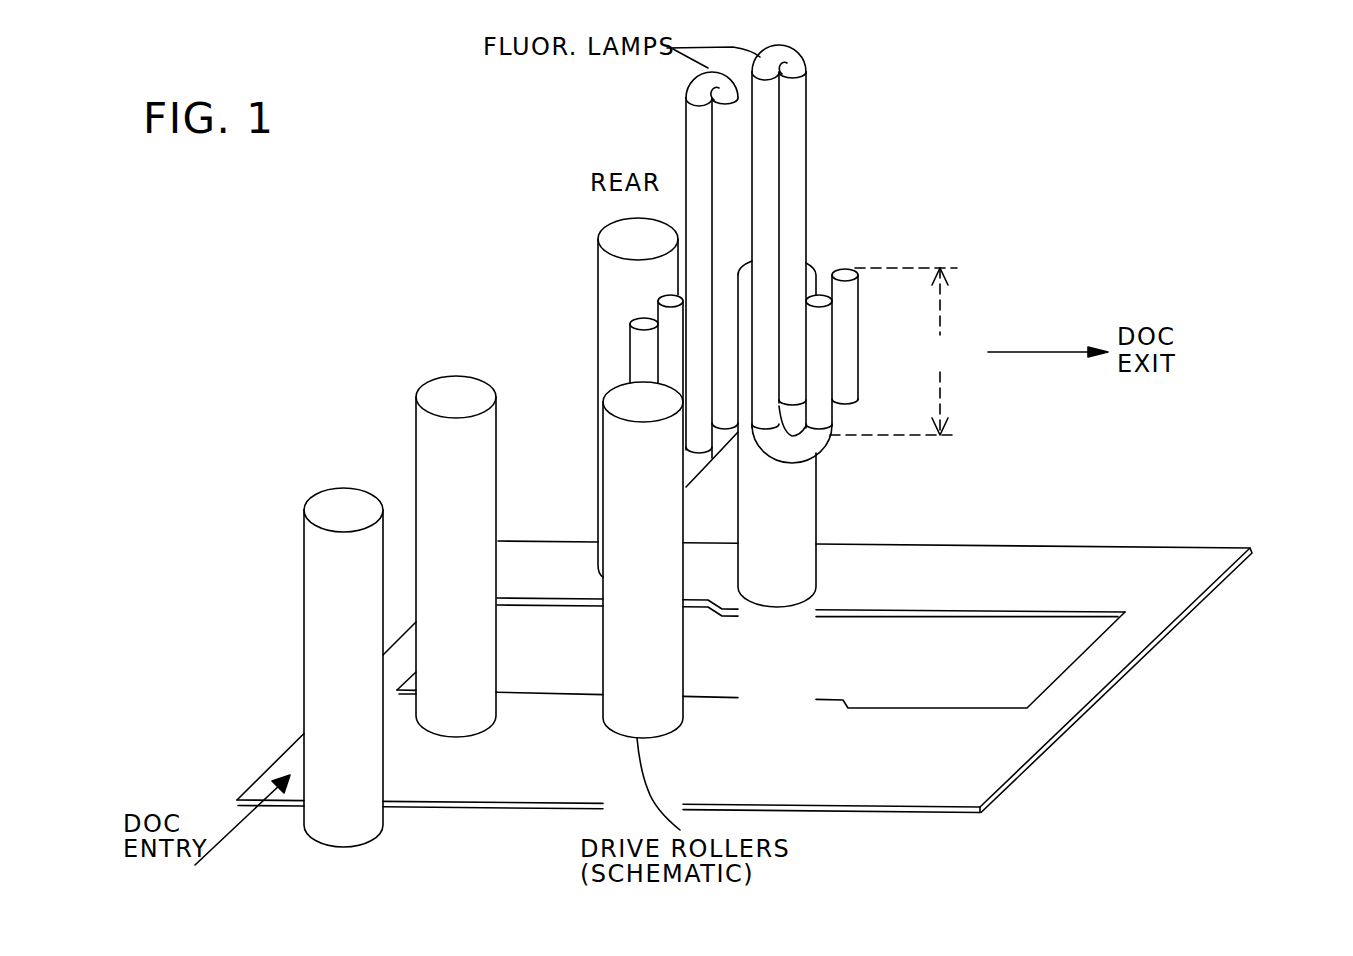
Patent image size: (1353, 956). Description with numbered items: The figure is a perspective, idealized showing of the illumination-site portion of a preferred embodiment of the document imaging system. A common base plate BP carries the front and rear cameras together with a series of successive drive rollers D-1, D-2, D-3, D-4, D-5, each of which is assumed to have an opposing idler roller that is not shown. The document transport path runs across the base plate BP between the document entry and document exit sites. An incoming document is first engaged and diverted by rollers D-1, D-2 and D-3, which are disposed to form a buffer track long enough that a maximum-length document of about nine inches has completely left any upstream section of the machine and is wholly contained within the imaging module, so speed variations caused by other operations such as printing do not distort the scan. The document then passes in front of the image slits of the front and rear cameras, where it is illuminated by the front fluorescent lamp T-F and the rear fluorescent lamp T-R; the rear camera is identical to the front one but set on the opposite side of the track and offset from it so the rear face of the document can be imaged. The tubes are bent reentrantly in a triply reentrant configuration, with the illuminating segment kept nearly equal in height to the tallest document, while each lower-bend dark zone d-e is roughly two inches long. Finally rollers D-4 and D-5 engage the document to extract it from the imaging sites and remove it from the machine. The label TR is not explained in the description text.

The drive roller D-1 is at (310, 578).
The drive roller D-2 is at (418, 440).
The drive roller D-3 is at (613, 432).
The drive roller D-4 is at (816, 518).
The drive roller D-5 is at (603, 307).
The fluorescent lamp T-R is at (686, 92).
The fluorescent lamp T-F is at (800, 67).
The tube/roller TR is at (805, 243).
The base plate BP is at (1080, 543).
The dark zone d-e is at (894, 351).